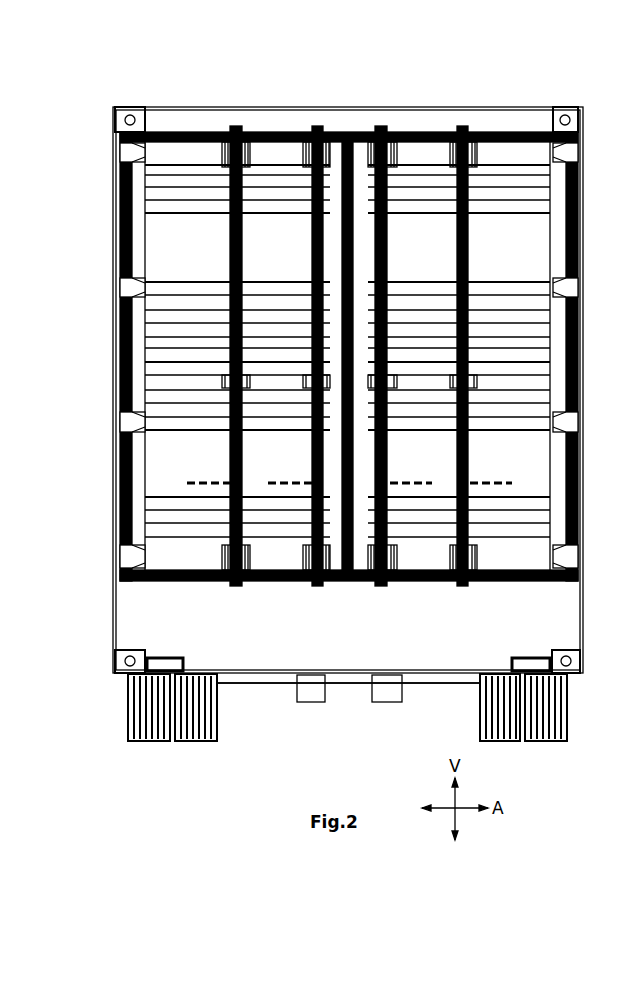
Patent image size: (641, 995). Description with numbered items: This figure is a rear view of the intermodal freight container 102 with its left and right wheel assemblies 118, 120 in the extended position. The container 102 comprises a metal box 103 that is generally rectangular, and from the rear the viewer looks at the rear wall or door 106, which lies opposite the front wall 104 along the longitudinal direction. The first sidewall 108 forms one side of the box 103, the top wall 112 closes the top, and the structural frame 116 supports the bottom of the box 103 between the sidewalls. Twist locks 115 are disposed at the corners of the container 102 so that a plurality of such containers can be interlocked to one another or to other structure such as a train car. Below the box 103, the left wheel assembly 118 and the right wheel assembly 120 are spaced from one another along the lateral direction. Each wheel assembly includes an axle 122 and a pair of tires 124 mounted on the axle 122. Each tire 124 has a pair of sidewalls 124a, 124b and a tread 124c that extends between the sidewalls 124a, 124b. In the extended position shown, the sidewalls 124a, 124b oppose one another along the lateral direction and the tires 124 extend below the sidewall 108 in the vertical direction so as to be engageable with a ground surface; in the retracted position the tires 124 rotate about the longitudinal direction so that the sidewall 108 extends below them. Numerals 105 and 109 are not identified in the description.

The intermodal freight container 102 is at (340, 92).
The metal box 103 is at (186, 122).
The front wall 104 is at (380, 356).
The vertical post 105 is at (435, 356).
The rear wall or door 106 is at (168, 248).
The first sidewall 108 is at (491, 356).
The inner rail 109 is at (393, 356).
The top wall 112 is at (380, 591).
The twist lock 115 is at (130, 116).
The structural frame 116 is at (372, 702).
The axle 122 is at (264, 676).
The tire 124 is at (308, 744).
The first tire sidewall 124a is at (128, 712).
The second tire sidewall 124b is at (217, 736).
The tread 124c is at (150, 742).
The left wheel assembly 118 is at (128, 750).
The right wheel assembly 120 is at (565, 750).